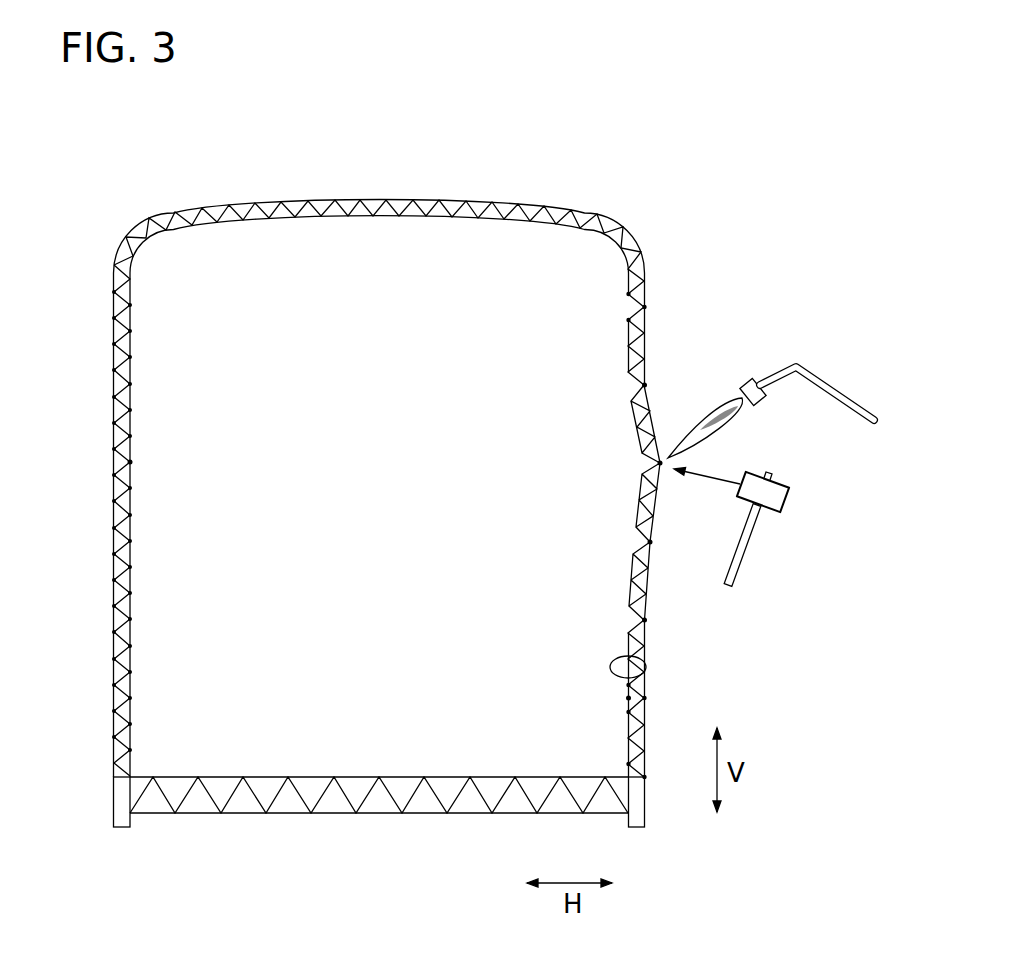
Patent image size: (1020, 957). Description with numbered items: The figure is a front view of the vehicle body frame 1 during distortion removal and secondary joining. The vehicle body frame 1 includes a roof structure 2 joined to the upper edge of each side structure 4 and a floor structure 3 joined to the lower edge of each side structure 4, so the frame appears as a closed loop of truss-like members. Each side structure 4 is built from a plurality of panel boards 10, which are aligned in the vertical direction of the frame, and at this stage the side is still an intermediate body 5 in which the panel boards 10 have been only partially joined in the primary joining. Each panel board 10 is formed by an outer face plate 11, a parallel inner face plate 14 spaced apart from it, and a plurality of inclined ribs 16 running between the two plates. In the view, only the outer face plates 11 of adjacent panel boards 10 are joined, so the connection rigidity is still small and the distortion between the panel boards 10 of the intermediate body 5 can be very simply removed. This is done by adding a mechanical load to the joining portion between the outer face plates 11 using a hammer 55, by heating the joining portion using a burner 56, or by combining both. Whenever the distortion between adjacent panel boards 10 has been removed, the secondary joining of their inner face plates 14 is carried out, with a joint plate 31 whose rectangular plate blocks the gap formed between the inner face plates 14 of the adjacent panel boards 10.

The vehicle body frame 1 is at (138, 198).
The roof structure 2 is at (350, 198).
The floor structure 3 is at (338, 817).
The side structure 4 is at (105, 348).
The intermediate body 5 is at (650, 333).
The panel board 10 is at (113, 410).
The outer face plate 11 is at (650, 412).
The inner face plate 14 is at (630, 678).
The rib 16 is at (640, 650).
The joint plate 31 is at (130, 463).
The hammer 55 is at (788, 500).
The burner 56 is at (840, 380).